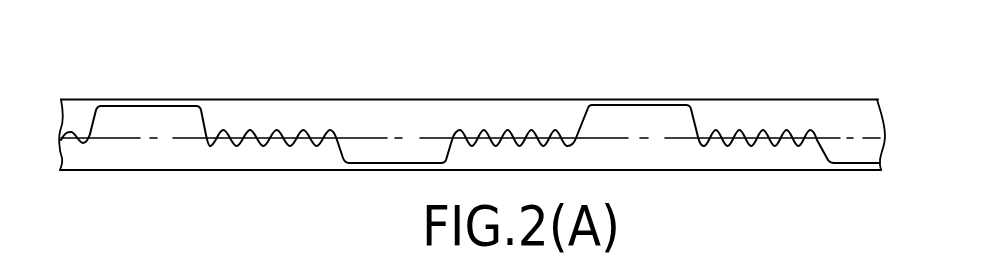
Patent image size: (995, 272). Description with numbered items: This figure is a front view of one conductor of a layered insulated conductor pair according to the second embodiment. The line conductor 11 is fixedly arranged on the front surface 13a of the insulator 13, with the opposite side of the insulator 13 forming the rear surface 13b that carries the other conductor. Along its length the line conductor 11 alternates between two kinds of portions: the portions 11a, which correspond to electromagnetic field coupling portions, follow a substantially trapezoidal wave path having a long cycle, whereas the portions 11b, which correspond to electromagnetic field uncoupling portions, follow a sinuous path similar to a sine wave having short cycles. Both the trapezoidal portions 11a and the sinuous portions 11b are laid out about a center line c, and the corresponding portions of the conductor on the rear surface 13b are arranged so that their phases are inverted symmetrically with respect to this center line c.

The line conductor 11 is at (162, 99).
The portions of the line conductor 11a is at (188, 102).
The portions of the line conductor 11b is at (303, 130).
The insulator 13 is at (390, 118).
The front surface 13a is at (505, 112).
The rear surface 13b is at (558, 110).
The center line c is at (100, 138).